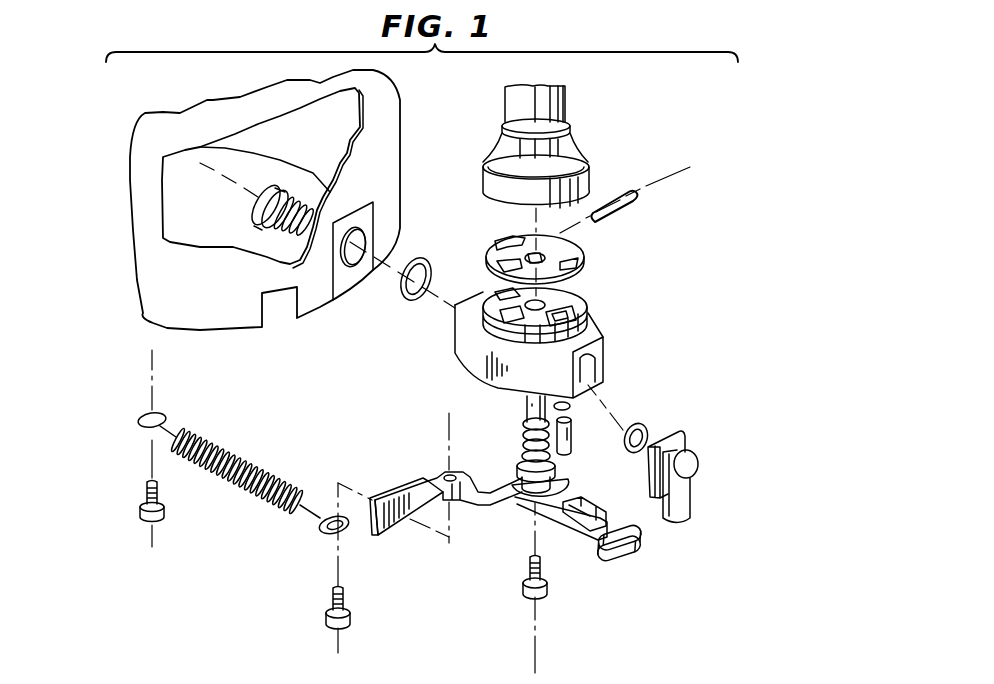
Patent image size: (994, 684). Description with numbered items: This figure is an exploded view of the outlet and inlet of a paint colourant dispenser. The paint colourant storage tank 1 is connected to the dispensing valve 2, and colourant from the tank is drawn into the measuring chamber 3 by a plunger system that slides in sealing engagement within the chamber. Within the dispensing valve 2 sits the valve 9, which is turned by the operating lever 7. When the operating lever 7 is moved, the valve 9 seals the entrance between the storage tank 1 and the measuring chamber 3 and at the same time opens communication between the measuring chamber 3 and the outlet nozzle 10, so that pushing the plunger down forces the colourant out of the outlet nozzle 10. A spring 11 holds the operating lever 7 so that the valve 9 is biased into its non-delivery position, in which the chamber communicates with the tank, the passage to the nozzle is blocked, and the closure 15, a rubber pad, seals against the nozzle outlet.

The paint colourant storage tank 1 is at (393, 128).
The dispensing valve 2 is at (613, 323).
The measuring chamber 3 is at (548, 105).
The operating lever 7 is at (389, 527).
The valve 9 is at (580, 260).
The outlet nozzle 10 is at (688, 508).
The spring 11 is at (248, 493).
The closure 15 is at (647, 538).